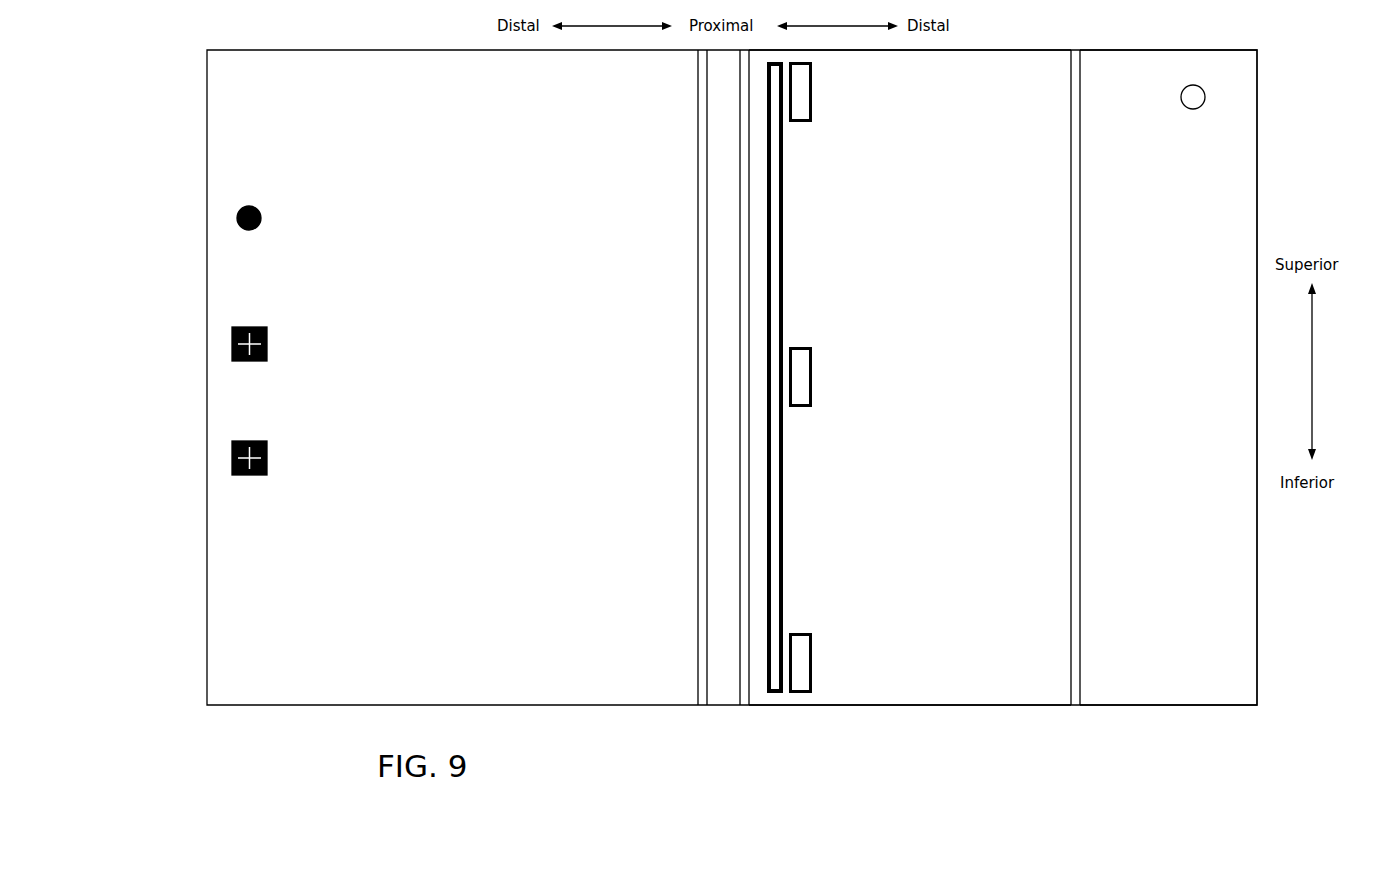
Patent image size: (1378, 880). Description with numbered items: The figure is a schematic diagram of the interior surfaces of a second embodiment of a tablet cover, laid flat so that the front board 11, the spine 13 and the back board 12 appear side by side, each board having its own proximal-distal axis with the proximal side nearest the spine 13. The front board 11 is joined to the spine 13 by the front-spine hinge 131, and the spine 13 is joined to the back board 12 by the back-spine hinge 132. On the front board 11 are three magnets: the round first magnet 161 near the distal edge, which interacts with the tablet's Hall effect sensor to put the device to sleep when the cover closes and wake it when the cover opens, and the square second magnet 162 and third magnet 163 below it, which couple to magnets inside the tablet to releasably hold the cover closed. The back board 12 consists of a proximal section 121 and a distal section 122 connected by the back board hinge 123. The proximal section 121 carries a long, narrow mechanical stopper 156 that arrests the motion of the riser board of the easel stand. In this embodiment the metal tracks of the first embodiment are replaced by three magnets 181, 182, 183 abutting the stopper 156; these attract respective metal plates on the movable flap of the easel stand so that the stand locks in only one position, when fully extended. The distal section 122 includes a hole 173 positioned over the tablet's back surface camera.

The front board 11 is at (452, 377).
The back board 12 is at (1002, 726).
The spine 13 is at (723, 403).
The proximal section 121 is at (910, 377).
The distal section 122 is at (1168, 377).
The back board hinge 123 is at (1075, 706).
The front-spine hinge 131 is at (695, 645).
The back-spine hinge 132 is at (745, 706).
The mechanical stopper 156 is at (784, 453).
The first magnet 161 is at (254, 206).
The second magnet 162 is at (268, 330).
The third magnet 163 is at (268, 444).
The hole 173 is at (1192, 110).
The magnet 181 is at (813, 88).
The magnet 182 is at (813, 378).
The magnet 183 is at (813, 650).